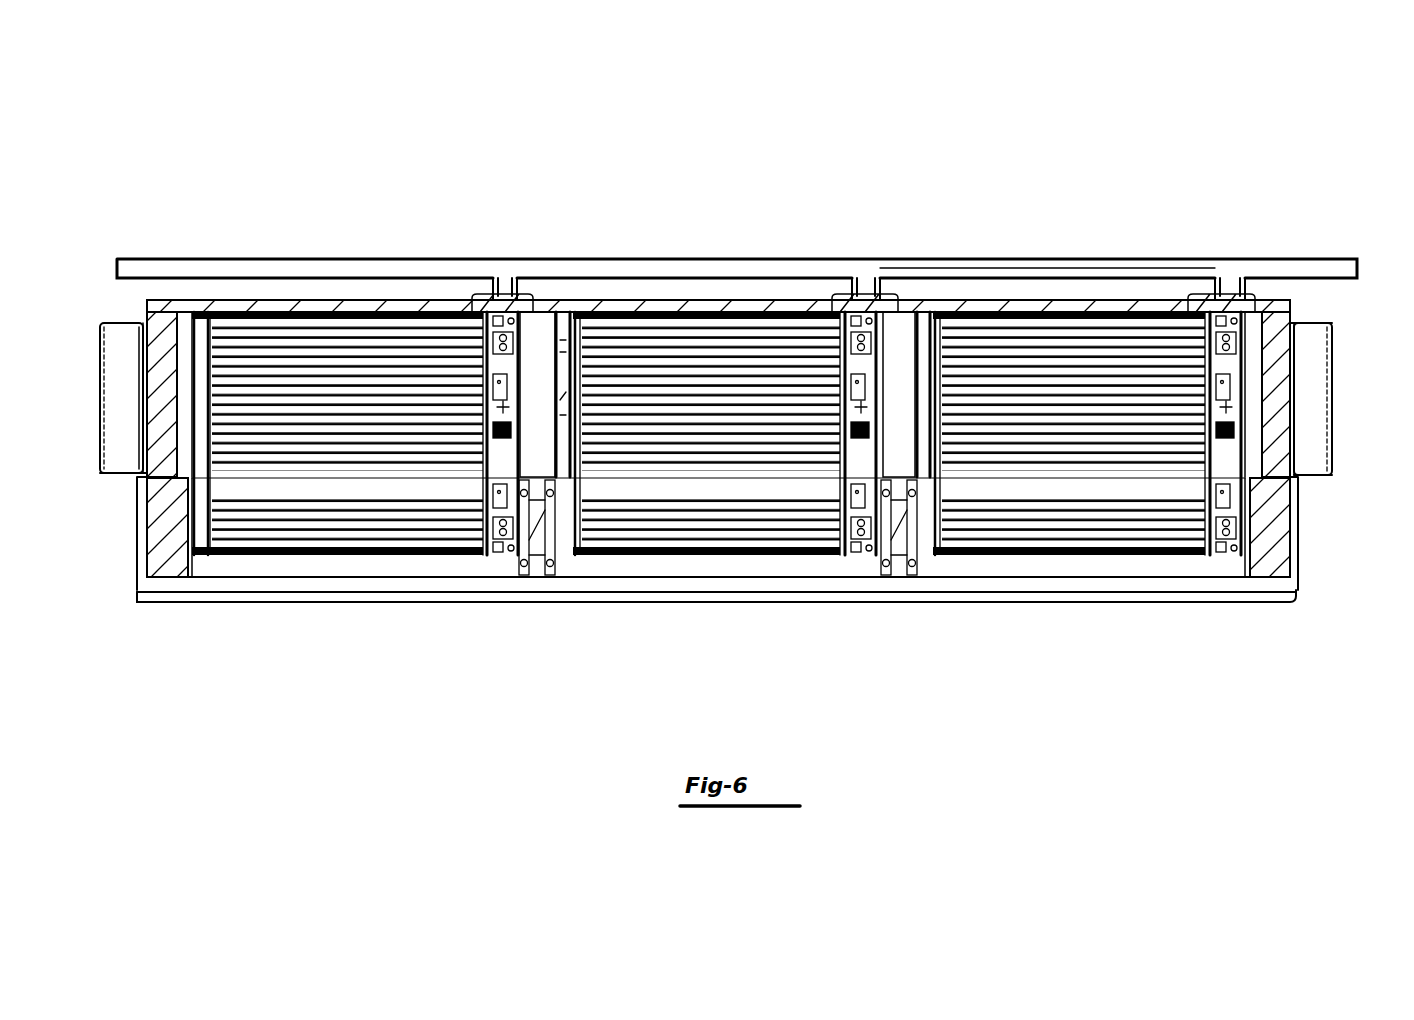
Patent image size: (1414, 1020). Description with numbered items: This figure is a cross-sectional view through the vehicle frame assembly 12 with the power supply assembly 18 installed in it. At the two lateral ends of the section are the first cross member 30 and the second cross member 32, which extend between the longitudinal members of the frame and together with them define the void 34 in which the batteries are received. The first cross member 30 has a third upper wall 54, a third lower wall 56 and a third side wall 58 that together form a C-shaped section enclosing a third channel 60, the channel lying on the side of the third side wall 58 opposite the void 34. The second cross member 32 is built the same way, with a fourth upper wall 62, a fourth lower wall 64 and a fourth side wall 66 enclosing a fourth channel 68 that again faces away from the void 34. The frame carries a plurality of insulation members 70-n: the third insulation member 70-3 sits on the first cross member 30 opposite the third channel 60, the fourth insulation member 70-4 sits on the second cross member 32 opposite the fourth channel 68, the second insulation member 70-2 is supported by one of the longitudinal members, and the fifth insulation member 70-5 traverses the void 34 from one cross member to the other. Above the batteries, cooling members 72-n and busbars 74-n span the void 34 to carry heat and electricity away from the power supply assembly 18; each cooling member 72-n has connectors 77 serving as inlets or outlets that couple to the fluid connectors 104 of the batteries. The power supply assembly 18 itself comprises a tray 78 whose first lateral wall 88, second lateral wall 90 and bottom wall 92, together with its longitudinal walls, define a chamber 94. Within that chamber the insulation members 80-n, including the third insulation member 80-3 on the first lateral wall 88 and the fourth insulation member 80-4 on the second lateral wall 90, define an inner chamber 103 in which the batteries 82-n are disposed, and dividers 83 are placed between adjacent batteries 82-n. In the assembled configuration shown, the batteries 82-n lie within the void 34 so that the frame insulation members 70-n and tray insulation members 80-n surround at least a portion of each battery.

The frame assembly 12 is at (443, 118).
The power supply assembly 18 is at (303, 292).
The first cross member 30 is at (1322, 372).
The second cross member 32 is at (100, 400).
The void 34 is at (896, 340).
The third upper wall 54 is at (1332, 325).
The third lower wall 56 is at (1320, 480).
The third side wall 58 is at (1310, 455).
The third channel 60 is at (1314, 435).
The fourth upper wall 62 is at (145, 308).
The fourth lower wall 64 is at (110, 475).
The fourth side wall 66 is at (147, 445).
The fourth channel 68 is at (120, 378).
The insulation members 70-n is at (732, 301).
The second insulation member 70-2 is at (535, 355).
The third insulation member 70-3 is at (1270, 330).
The fourth insulation member 70-4 is at (160, 330).
The fifth insulation member 70-5 is at (655, 312).
The cooling members 72-n is at (1040, 275).
The busbars 74-n is at (1128, 275).
The connectors 77 is at (505, 292).
The tray 78 is at (140, 598).
The insulation members 80-n is at (733, 606).
The third insulation member 80-3 is at (178, 560).
The fourth insulation member 80-4 is at (1275, 570).
The batteries 82-n is at (432, 585).
The dividers 83 is at (540, 578).
The first lateral wall 88 is at (145, 555).
The second lateral wall 90 is at (1290, 565).
The bottom wall 92 is at (425, 587).
The chamber 94 is at (1158, 568).
The chamber 103 is at (343, 570).
The fluid connectors 104 is at (1190, 305).